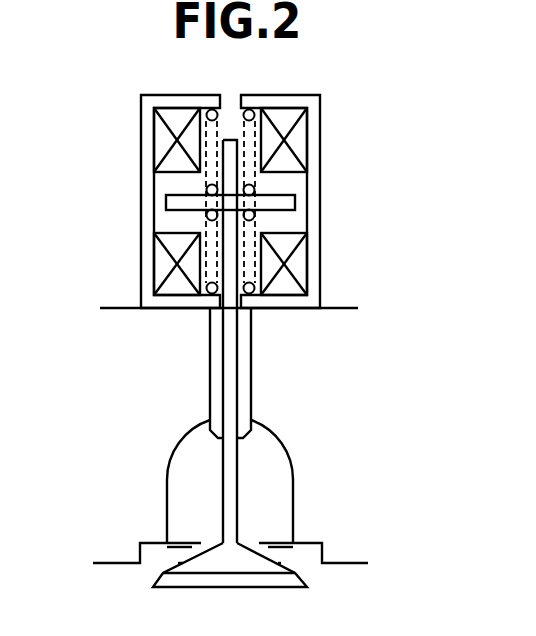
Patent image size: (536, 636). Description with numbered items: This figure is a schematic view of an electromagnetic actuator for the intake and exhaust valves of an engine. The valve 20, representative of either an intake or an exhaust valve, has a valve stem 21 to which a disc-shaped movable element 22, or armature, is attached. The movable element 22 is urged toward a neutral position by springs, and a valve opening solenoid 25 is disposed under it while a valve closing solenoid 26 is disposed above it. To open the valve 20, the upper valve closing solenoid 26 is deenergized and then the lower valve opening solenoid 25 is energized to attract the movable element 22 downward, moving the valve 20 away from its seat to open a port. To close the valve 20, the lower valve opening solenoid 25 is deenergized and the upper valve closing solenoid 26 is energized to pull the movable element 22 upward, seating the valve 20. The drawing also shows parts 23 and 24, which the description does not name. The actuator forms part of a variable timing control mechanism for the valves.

The valve 20 is at (298, 583).
The valve stem 21 is at (230, 489).
The movable element 22 is at (297, 201).
The spring 23 is at (207, 179).
The spring retainer 24 is at (207, 216).
The valve opening solenoid 25 is at (165, 268).
The valve closing solenoid 26 is at (165, 141).